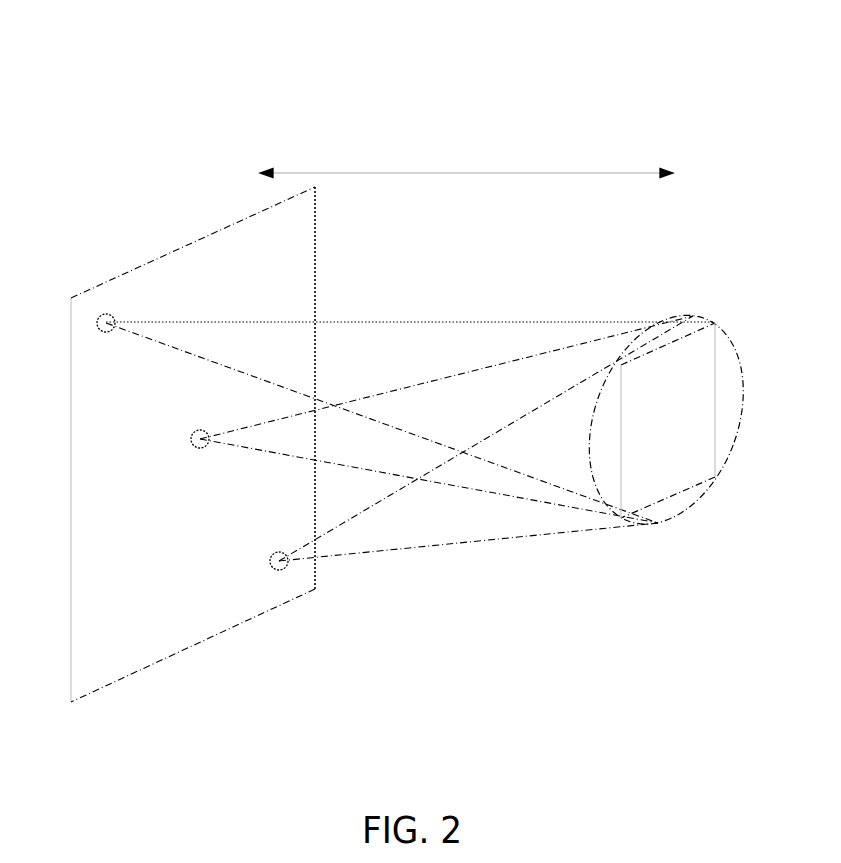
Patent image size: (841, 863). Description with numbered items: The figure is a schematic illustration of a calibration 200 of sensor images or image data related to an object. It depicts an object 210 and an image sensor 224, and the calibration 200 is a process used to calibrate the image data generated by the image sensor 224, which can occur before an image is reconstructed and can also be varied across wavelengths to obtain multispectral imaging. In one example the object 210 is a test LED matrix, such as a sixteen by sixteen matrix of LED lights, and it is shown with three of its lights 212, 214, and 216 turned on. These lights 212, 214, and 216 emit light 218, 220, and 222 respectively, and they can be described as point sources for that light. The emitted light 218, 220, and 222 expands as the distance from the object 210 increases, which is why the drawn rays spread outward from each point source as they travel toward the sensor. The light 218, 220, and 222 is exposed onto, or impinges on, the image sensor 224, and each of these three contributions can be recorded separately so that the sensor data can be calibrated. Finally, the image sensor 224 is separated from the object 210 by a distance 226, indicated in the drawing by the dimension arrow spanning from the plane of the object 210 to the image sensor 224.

The calibration 200 is at (90, 60).
The object 210 is at (272, 207).
The light 212 is at (108, 314).
The light 214 is at (191, 440).
The light 216 is at (278, 570).
The light 218 is at (393, 320).
The light 220 is at (488, 367).
The light 222 is at (575, 380).
The image sensor 224 is at (688, 332).
The distance 226 is at (490, 162).